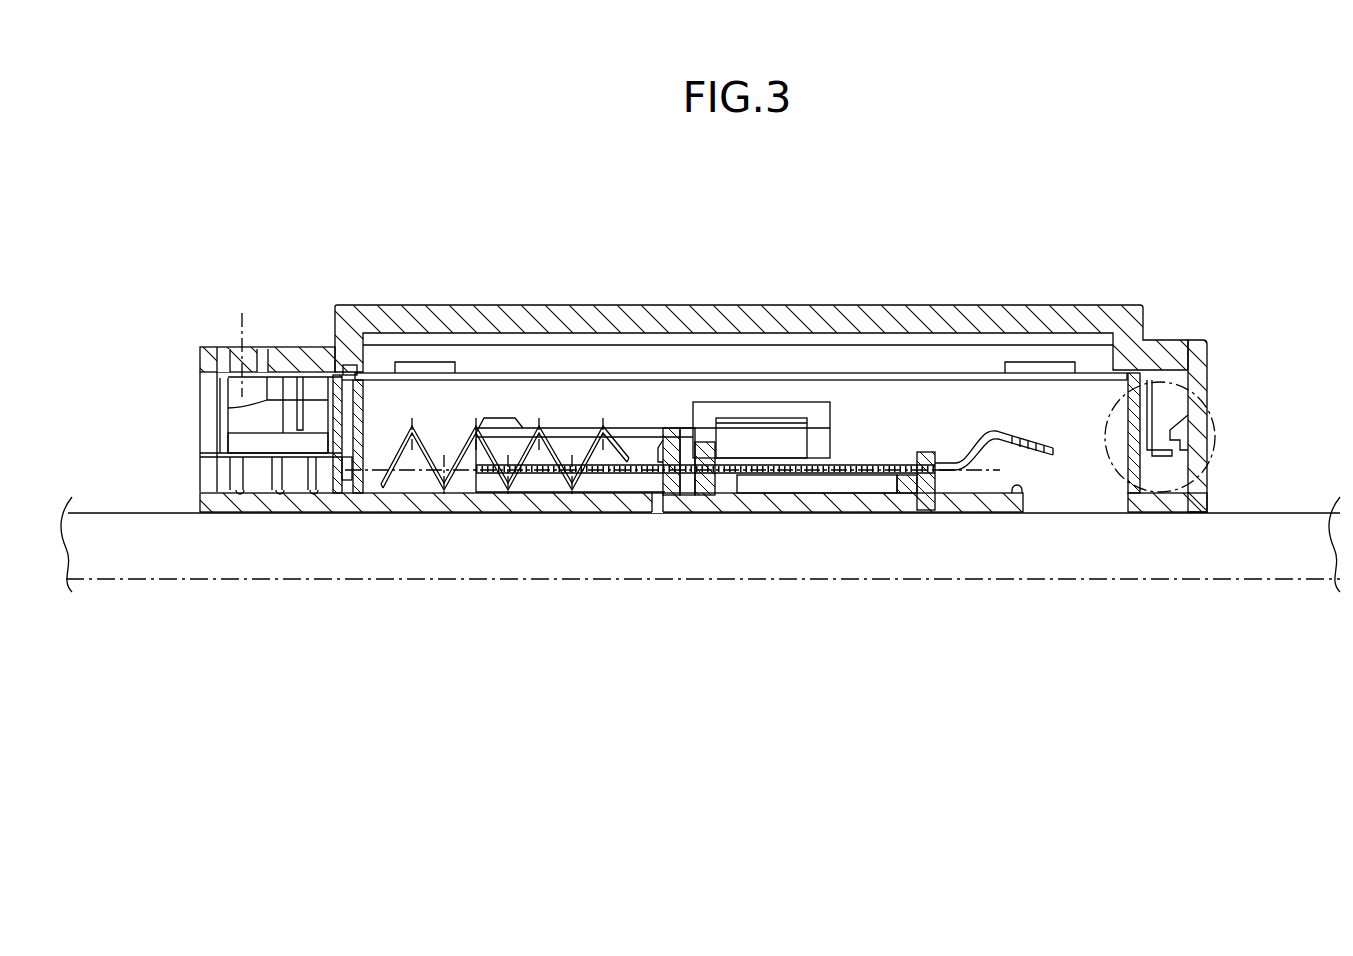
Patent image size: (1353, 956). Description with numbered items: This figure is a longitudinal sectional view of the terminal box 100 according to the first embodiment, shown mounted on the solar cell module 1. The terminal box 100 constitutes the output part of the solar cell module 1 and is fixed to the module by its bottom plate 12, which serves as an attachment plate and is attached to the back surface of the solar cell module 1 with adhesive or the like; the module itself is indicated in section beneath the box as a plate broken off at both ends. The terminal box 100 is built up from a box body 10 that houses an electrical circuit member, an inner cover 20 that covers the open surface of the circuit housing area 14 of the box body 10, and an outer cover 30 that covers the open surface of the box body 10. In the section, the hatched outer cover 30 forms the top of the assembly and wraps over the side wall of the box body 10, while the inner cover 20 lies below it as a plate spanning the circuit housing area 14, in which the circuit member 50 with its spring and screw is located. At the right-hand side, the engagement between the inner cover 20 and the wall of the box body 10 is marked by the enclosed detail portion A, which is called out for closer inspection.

The solar cell module 1 is at (791, 550).
The terminal box 100 is at (757, 408).
The box body 10 is at (1208, 390).
The bottom plate 12 is at (506, 516).
The circuit housing area 14 is at (572, 418).
The inner cover 20 is at (640, 373).
The outer cover 30 is at (770, 303).
The contact member 50 is at (868, 425).
The portion A is at (1215, 438).